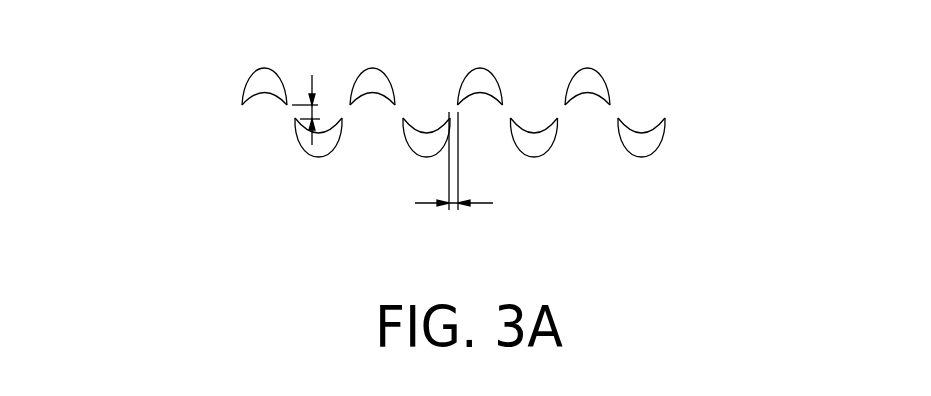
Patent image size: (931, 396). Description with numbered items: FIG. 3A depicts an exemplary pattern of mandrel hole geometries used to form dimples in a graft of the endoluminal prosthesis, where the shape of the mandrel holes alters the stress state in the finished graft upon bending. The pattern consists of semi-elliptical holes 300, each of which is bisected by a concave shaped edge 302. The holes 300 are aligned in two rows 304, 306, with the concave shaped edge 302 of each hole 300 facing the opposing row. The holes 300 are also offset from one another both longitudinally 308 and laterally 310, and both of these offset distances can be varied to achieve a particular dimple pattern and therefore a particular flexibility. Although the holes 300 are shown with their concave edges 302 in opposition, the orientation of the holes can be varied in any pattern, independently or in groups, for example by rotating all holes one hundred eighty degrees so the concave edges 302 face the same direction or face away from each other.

The semi-elliptical holes 300 is at (662, 138).
The concave shaped edge 302 is at (645, 122).
The row 304 is at (268, 133).
The row 306 is at (216, 87).
The longitudinal offset 308 is at (450, 207).
The lateral offset 310 is at (318, 113).